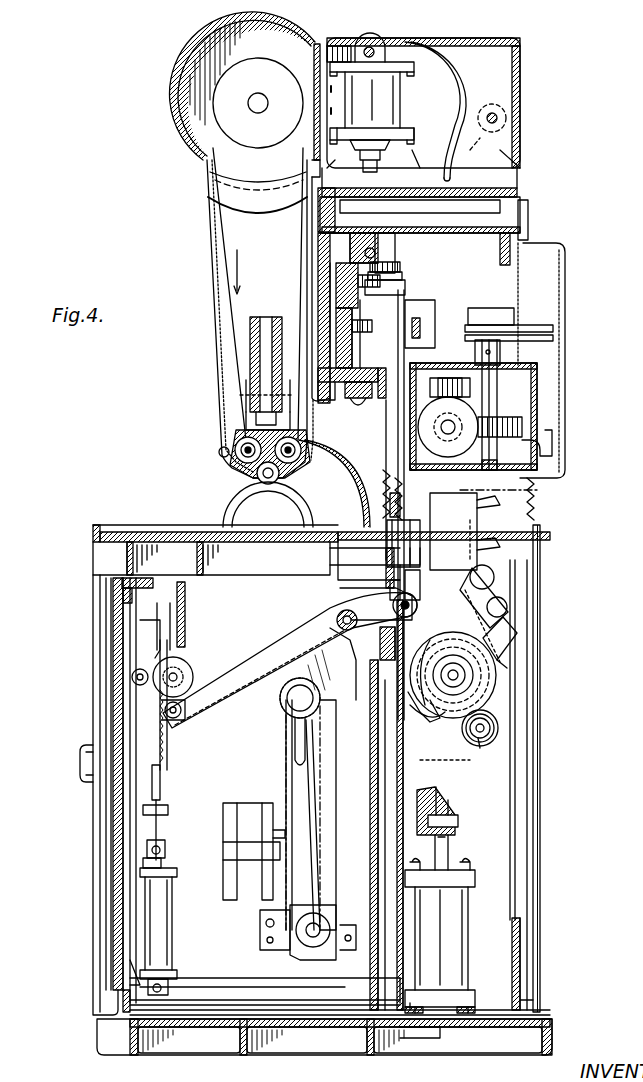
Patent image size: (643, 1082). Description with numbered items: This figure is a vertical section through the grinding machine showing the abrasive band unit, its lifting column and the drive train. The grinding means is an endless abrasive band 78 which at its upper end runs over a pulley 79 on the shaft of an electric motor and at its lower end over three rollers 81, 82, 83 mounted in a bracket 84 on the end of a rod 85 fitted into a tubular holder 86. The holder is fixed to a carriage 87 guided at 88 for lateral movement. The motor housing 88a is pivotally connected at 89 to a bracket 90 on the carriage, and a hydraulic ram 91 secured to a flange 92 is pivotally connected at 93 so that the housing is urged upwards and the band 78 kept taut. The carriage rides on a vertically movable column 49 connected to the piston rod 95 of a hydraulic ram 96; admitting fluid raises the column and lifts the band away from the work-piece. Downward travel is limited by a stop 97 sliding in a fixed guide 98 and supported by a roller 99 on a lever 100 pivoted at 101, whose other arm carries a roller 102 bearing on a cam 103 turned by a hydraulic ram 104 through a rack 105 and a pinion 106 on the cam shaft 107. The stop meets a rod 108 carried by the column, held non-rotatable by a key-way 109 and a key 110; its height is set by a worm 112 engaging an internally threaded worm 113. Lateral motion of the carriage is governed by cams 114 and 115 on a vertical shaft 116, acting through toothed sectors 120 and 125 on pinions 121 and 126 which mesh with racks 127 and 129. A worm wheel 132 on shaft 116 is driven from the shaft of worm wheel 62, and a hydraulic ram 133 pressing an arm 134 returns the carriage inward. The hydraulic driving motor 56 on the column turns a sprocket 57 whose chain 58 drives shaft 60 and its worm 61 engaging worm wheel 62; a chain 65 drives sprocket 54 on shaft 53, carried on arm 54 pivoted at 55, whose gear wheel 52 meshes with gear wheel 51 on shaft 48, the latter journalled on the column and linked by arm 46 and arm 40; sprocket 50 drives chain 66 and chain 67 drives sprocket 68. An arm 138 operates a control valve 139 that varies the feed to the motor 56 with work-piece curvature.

The arm 40 is at (398, 806).
The arm 46 is at (320, 708).
The shaft 48 is at (488, 755).
The vertically movable column 49 is at (440, 816).
The sprocket 50 is at (492, 742).
The gear wheel 51 is at (498, 729).
The gear wheel 52 is at (496, 692).
The shaft 53 is at (470, 676).
The arm 54 is at (445, 761).
The pivot 55 is at (437, 718).
The hydraulic driving motor 56 is at (462, 552).
The sprocket 57 is at (405, 530).
The driving chain 58 is at (398, 455).
The shaft 60 is at (500, 378).
The worm 61 is at (450, 378).
The worm wheel 62 is at (462, 428).
The driving chain 65 is at (540, 490).
The driving chain 66 is at (342, 676).
The driving chain 67 is at (286, 780).
The sprocket 68 is at (313, 947).
The endless abrasive band 78 is at (207, 237).
The pulley 79 is at (244, 112).
The roller 81 is at (235, 450).
The roller 82 is at (301, 450).
The roller 83 is at (257, 481).
The bracket 84 is at (290, 322).
The rod 85 is at (256, 418).
The tubular holder 86 is at (240, 396).
The carriage 87 is at (498, 190).
The guide 88 is at (246, 388).
The housing 88a is at (520, 96).
The pivot 89 is at (506, 120).
The bracket 90 is at (518, 140).
The hydraulic ram 91 is at (395, 112).
The flange 92 is at (392, 170).
The pivotal connection 93 is at (369, 47).
The piston rod 95 is at (450, 855).
The hydraulic ram 96 is at (445, 950).
The stop 97 is at (408, 590).
The fixed guide 98 is at (330, 563).
The roller 99 is at (418, 608).
The lever 100 is at (272, 658).
The pivot 101 is at (337, 622).
The roller 102 is at (172, 720).
The cam 103 is at (185, 666).
The hydraulic ram 104 is at (162, 932).
The rack 105 is at (168, 775).
The pinion 106 is at (183, 676).
The shaft 107 is at (192, 690).
The rod 108 is at (412, 310).
The key-way 109 is at (394, 470).
The key 110 is at (388, 504).
The worm 112 is at (368, 248).
The internally screw-threaded worm 113 is at (420, 263).
The cam 114 is at (553, 337).
The cam 115 is at (545, 322).
The vertical shaft 116 is at (497, 400).
The toothed sector 120 is at (445, 318).
The pinion 121 is at (272, 345).
The toothed sector 125 is at (395, 287).
The pinion 126 is at (340, 314).
The rack 127 is at (250, 334).
The rack 129 is at (345, 330).
The worm wheel 132 is at (512, 441).
The hydraulic ram 133 is at (363, 413).
The arm 134 is at (350, 398).
The arm 138 is at (268, 824).
The control valve 139 is at (240, 800).